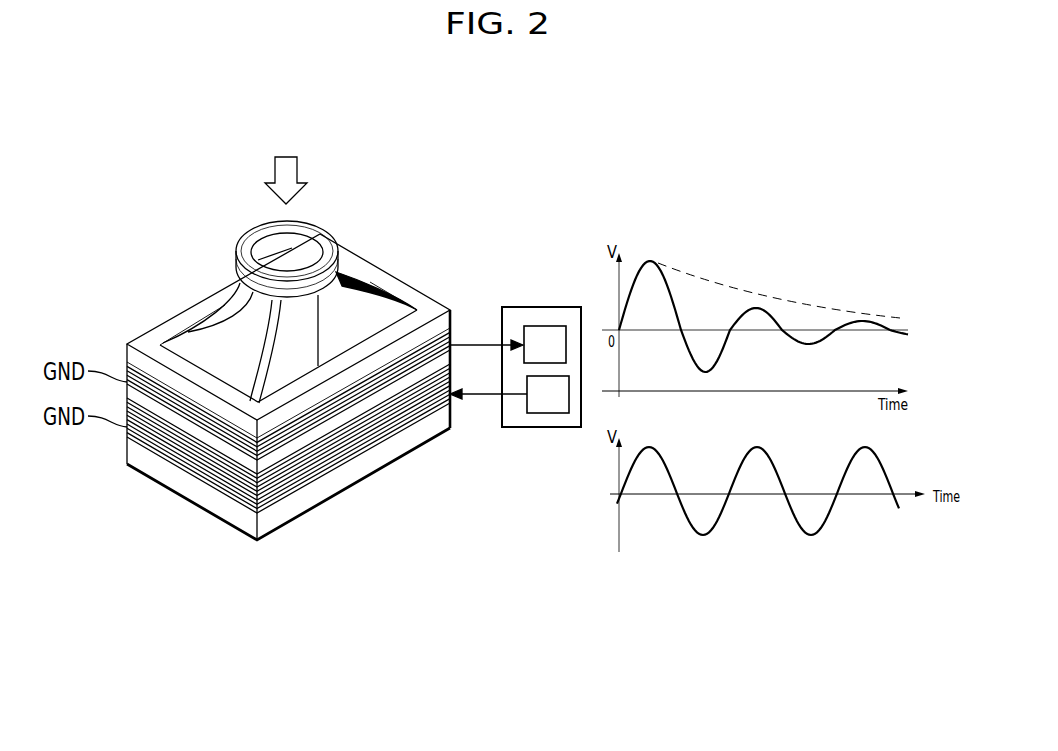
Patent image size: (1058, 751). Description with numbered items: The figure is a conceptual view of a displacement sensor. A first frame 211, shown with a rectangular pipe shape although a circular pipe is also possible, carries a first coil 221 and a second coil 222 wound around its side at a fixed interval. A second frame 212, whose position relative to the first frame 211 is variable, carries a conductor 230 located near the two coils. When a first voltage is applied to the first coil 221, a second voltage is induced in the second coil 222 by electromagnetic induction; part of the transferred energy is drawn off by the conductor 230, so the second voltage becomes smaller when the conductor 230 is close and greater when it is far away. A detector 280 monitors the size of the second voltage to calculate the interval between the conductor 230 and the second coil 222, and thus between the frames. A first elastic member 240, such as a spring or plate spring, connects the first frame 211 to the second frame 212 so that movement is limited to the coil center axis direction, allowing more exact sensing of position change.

The first frame 211 is at (407, 294).
The second frame 212 is at (236, 277).
The first coil 221 is at (300, 480).
The second coil 222 is at (337, 415).
The conductor 230 is at (325, 236).
The first elastic member 240 is at (200, 324).
The detector 280 is at (540, 307).